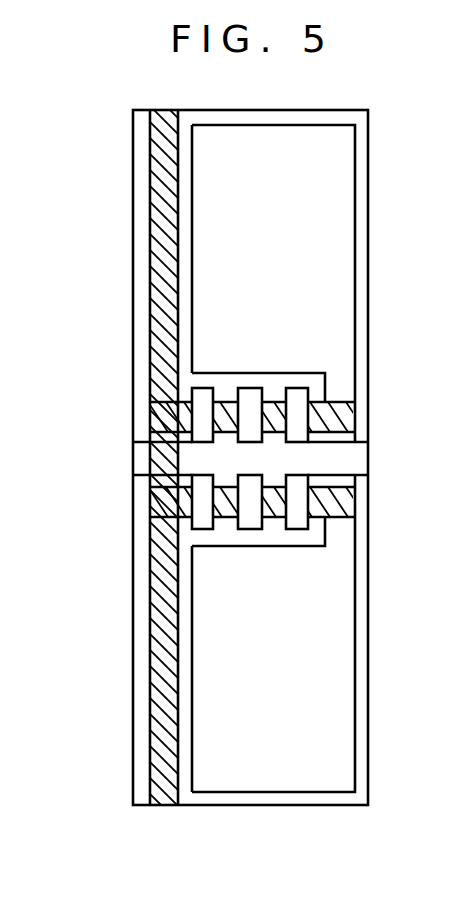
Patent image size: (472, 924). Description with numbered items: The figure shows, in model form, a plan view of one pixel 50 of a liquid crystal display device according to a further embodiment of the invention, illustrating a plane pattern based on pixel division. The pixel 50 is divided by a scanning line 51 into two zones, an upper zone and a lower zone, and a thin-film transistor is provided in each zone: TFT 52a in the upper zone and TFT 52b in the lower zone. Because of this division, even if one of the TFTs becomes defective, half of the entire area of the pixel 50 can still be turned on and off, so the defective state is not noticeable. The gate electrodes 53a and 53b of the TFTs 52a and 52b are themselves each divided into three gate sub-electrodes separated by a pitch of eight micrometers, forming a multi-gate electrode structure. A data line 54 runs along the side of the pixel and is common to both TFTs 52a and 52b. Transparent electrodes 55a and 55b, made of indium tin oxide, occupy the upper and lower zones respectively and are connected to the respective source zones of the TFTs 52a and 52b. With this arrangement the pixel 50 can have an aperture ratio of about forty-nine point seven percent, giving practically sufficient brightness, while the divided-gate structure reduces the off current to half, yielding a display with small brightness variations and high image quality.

The pixel 50 is at (88, 750).
The scanning line 51 is at (140, 462).
The TFT 52a is at (222, 412).
The TFT 52b is at (222, 500).
The gate electrode 53a is at (202, 391).
The gate electrode 53b is at (305, 528).
The data line 54 is at (158, 317).
The transparent electrode 55a is at (205, 277).
The transparent electrode 55b is at (210, 635).